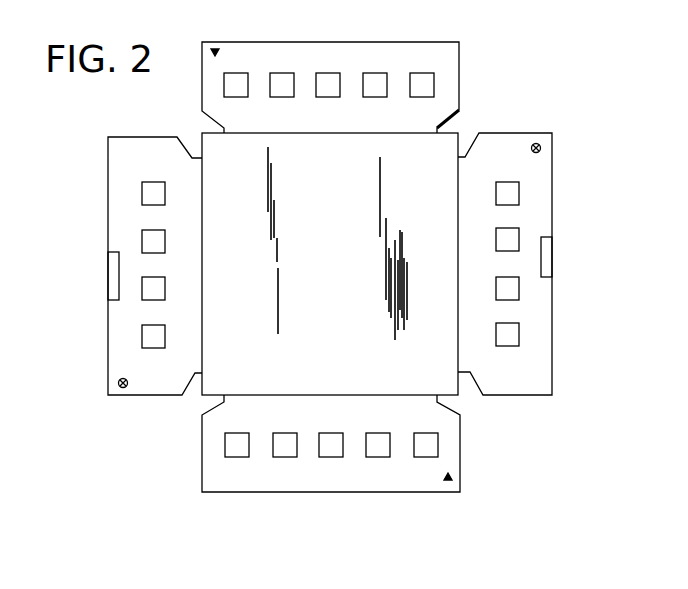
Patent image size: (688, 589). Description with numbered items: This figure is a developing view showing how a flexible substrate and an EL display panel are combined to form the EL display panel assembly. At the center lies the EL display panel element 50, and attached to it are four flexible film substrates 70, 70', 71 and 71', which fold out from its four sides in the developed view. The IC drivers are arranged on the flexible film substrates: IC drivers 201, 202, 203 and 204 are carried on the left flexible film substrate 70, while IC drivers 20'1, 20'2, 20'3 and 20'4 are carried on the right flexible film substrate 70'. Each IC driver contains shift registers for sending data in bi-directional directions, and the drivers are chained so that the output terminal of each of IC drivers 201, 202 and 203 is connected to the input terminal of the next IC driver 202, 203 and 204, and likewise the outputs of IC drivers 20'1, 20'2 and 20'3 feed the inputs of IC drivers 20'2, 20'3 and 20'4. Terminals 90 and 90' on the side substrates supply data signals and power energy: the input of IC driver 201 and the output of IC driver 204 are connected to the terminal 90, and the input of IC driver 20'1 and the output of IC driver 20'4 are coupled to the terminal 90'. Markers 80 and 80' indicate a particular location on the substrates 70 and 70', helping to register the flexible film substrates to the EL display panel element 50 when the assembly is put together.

The EL display panel element 50 is at (440, 143).
The flexible film substrate 71 is at (330, 71).
The flexible film substrate 71' is at (331, 463).
The flexible film substrate 70 is at (138, 266).
The flexible film substrate 70' is at (528, 264).
The marker 80 is at (119, 412).
The marker 80' is at (557, 136).
The terminal 90 is at (93, 276).
The terminal 90' is at (570, 253).
The IC driver 201 is at (142, 193).
The IC driver 202 is at (142, 235).
The IC driver 203 is at (148, 300).
The IC driver 204 is at (145, 343).
The IC driver 20'1 is at (550, 332).
The IC driver 20'2 is at (550, 292).
The IC driver 20'3 is at (550, 229).
The IC driver 20'4 is at (550, 189).